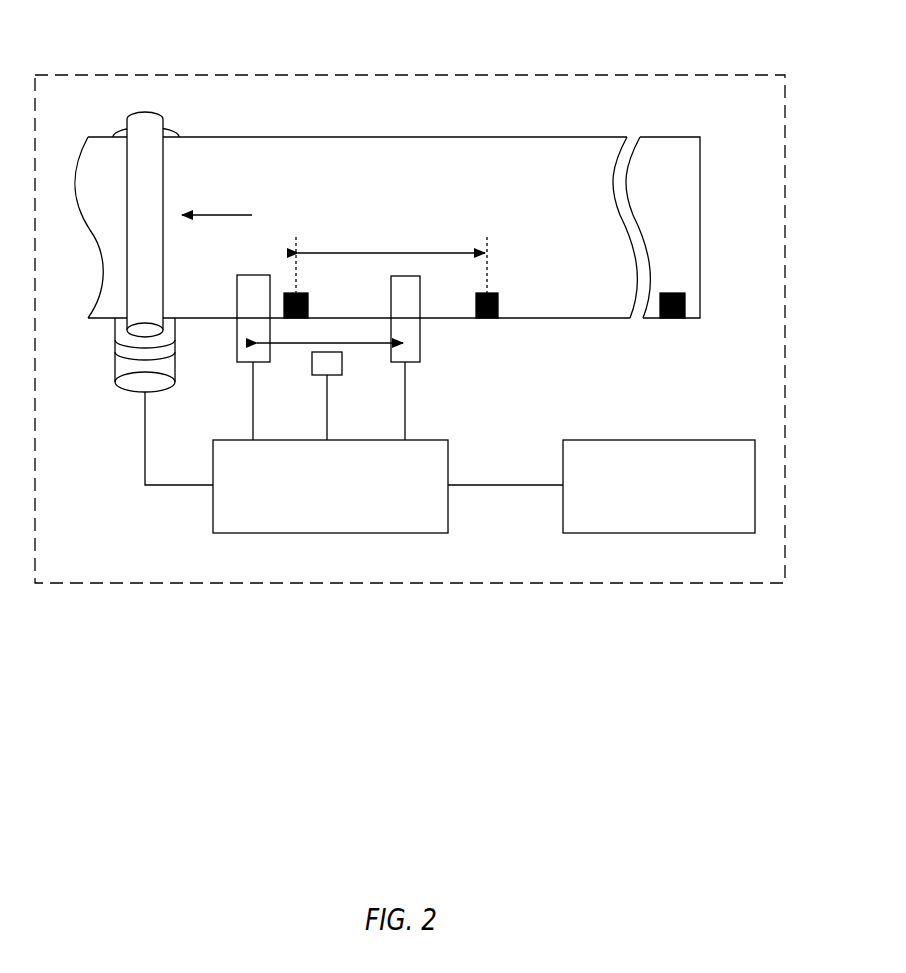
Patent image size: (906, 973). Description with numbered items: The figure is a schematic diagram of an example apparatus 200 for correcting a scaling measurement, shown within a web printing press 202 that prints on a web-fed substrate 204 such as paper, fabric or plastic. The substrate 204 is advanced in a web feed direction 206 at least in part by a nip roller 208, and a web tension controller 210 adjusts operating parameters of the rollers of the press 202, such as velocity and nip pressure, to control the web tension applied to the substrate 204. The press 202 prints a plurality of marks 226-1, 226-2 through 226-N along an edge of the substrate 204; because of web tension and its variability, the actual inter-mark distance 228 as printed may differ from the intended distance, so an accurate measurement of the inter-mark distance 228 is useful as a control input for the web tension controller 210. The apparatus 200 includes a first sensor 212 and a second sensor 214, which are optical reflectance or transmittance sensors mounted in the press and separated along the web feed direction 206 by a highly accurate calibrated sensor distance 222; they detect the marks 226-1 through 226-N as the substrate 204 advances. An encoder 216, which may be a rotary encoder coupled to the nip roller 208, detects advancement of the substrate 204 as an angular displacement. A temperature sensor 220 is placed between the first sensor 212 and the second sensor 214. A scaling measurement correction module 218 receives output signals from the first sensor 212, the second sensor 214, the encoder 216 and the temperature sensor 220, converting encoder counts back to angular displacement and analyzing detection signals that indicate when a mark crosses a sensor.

The apparatus 200 is at (138, 521).
The web printing press 202 is at (632, 75).
The web-fed substrate 204 is at (600, 320).
The web feed direction 206 is at (213, 212).
The nip roller 208 is at (115, 334).
The web tension controller 210 is at (673, 518).
The first sensor 212 is at (420, 349).
The second sensor 214 is at (237, 356).
The encoder 216 is at (115, 370).
The scaling measurement correction module 218 is at (345, 518).
The temperature sensor 220 is at (312, 369).
The calibrated sensor distance 222 is at (363, 346).
The mark 226-1 is at (309, 307).
The mark 226-2 is at (499, 307).
The mark 226-N is at (686, 307).
The inter-mark distance 228 is at (418, 250).